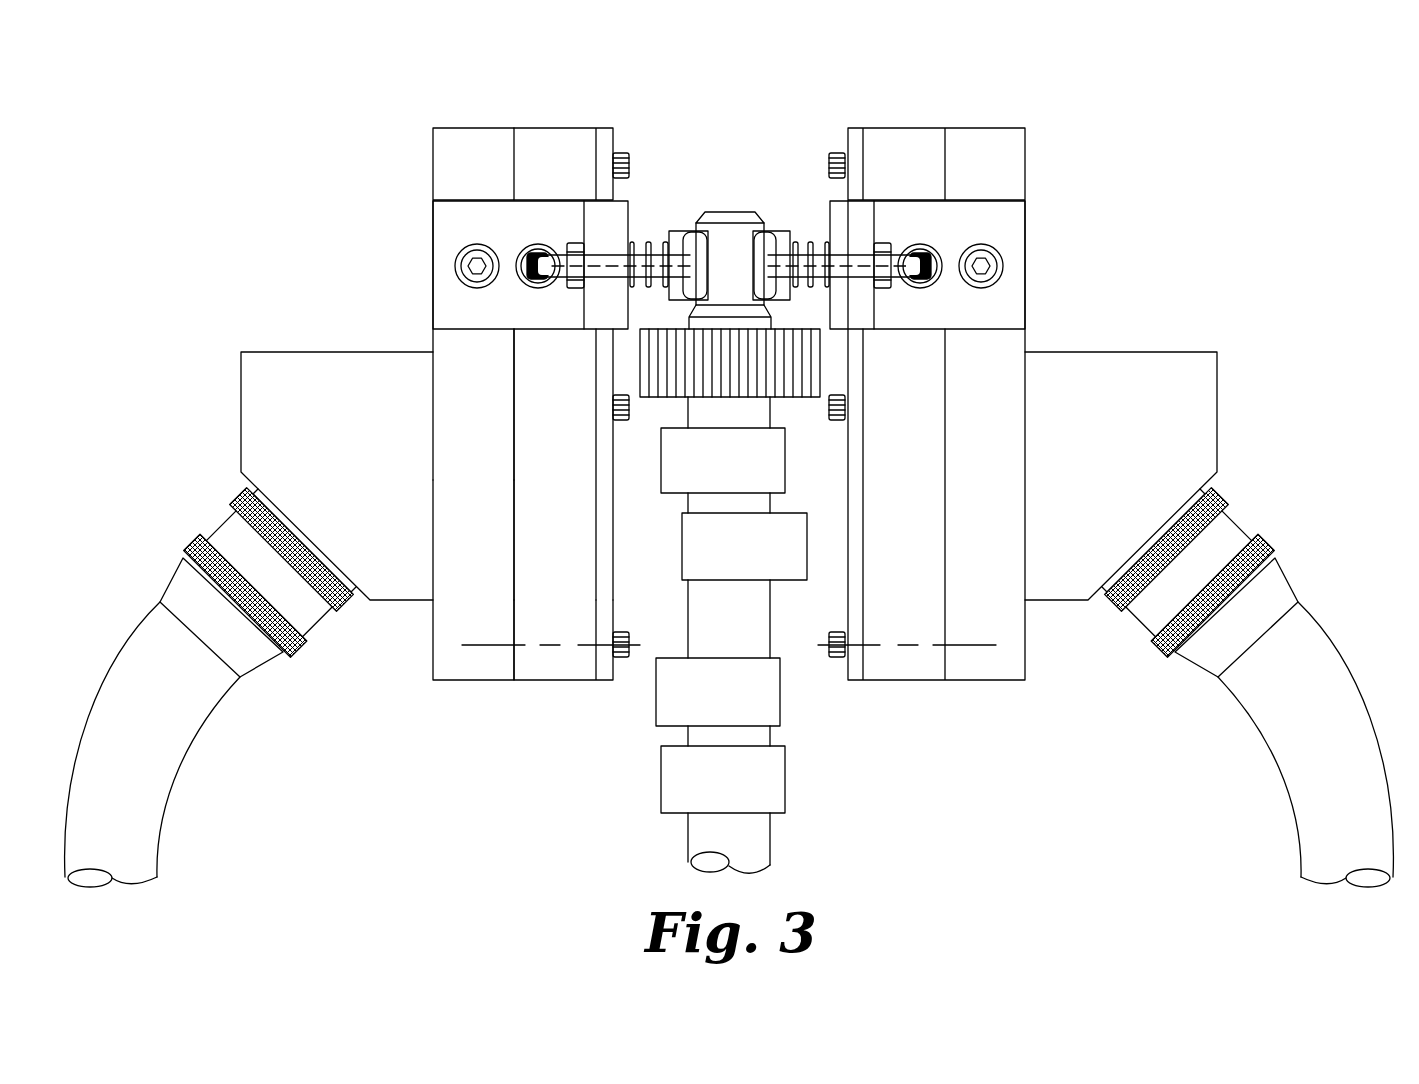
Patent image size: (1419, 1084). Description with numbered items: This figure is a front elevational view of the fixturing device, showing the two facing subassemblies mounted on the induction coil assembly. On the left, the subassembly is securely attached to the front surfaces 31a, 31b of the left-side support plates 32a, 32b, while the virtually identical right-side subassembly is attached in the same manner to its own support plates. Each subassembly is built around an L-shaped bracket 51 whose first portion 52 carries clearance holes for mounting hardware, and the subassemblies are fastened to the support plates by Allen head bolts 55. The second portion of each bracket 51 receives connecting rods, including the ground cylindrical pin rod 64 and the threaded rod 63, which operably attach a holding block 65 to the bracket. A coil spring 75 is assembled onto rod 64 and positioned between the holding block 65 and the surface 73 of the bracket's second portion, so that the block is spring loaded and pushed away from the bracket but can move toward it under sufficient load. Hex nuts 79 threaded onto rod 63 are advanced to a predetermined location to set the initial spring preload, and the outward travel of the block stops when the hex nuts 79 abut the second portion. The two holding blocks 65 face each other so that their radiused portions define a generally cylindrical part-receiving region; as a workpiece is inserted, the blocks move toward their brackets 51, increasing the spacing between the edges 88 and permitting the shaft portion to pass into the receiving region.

The front surface 31a is at (448, 625).
The front surface 31b is at (568, 503).
The left-side support plate 32a is at (452, 378).
The left-side support plate 32b is at (562, 662).
The L-shaped bracket 51 is at (877, 218).
The first portion 52 is at (1000, 225).
The Allen head bolt 55 is at (984, 272).
The connecting rod 63 is at (917, 248).
The connecting rod 64 is at (905, 272).
The holding block 65 is at (766, 243).
The surface 73 is at (831, 212).
The coil spring 75 is at (649, 242).
The hex nut 79 is at (572, 243).
The edge 88 is at (708, 247).